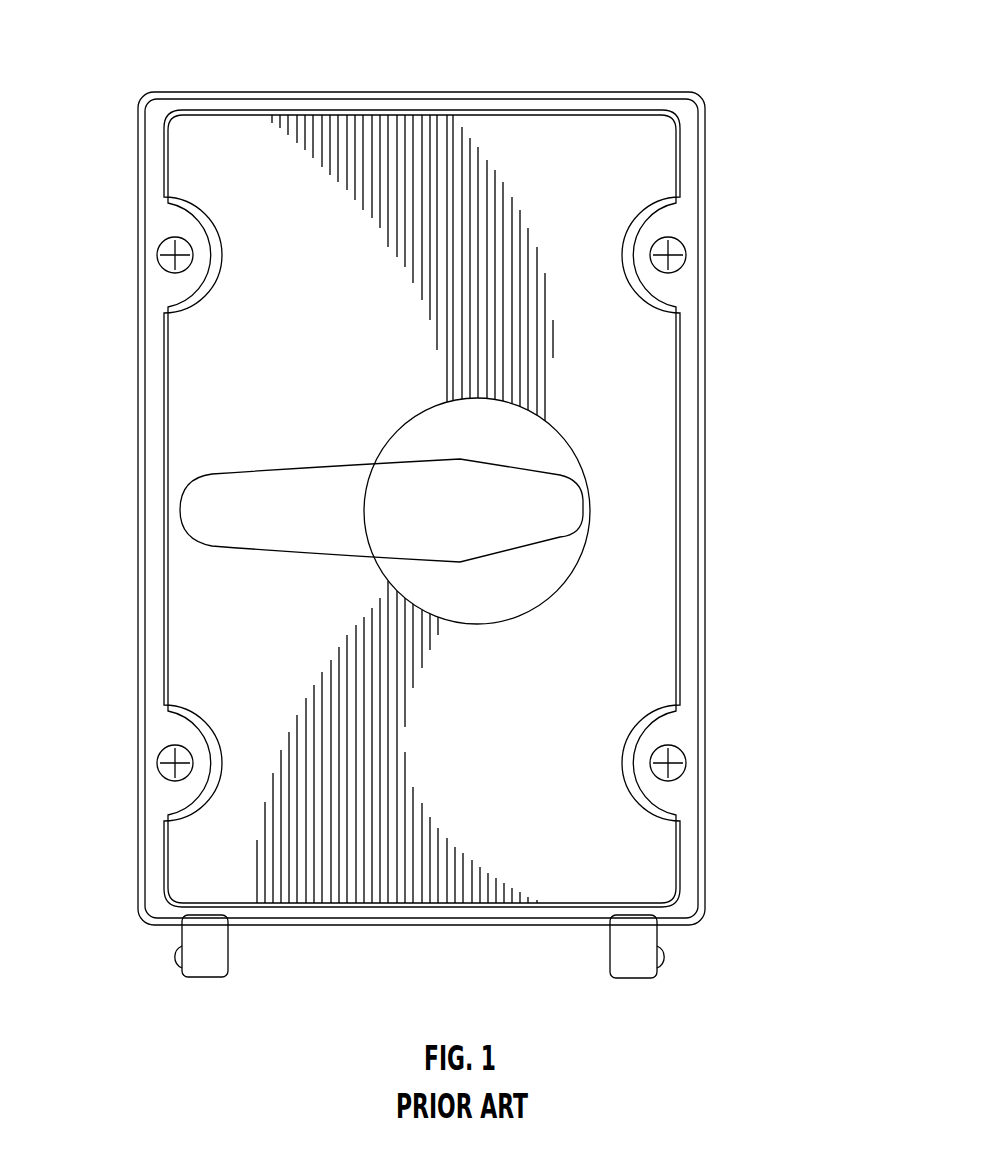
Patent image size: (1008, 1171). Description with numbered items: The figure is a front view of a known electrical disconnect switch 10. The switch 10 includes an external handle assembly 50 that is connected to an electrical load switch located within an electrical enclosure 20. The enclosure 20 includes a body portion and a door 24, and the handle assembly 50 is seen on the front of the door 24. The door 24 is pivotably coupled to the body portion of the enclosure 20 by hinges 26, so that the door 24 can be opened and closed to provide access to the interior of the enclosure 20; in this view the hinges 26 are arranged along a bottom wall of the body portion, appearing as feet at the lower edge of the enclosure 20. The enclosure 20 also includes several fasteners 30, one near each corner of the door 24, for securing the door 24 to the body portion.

The electrical disconnect switch 10 is at (740, 82).
The electrical enclosure 20 is at (662, 660).
The door 24 is at (256, 160).
The hinges 26 is at (180, 955).
The fasteners 30 is at (165, 258).
The external handle assembly 50 is at (197, 505).